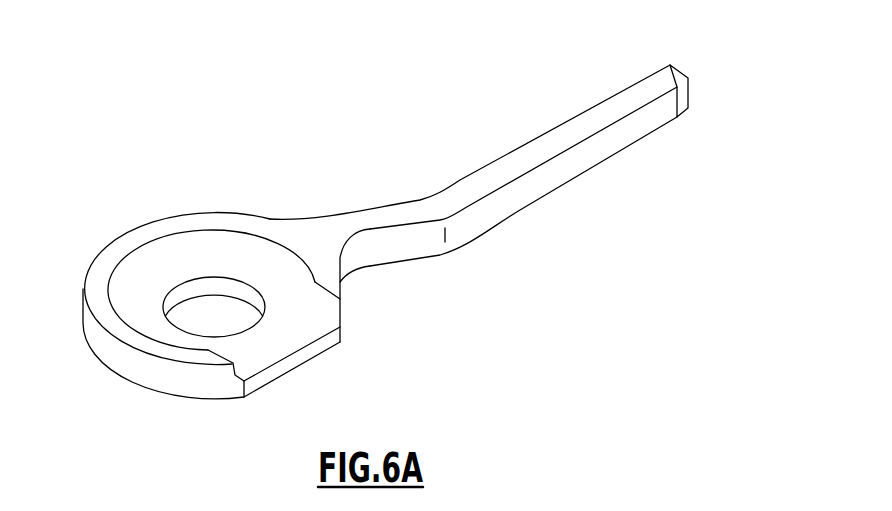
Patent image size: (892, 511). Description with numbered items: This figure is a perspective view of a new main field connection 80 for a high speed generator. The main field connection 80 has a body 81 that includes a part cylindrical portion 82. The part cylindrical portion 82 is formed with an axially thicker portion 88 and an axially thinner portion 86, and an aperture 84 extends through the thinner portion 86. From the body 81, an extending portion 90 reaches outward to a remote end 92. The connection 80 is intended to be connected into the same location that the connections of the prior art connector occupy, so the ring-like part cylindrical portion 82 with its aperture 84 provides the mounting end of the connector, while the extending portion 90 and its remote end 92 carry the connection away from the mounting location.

The main field connection 80 is at (622, 225).
The body 81 is at (323, 253).
The part cylindrical portion 82 is at (147, 263).
The aperture 84 is at (222, 305).
The axially thinner portion 86 is at (307, 352).
The axially thicker portion 88 is at (107, 355).
The extending portion 90 is at (508, 172).
The remote end 92 is at (687, 70).